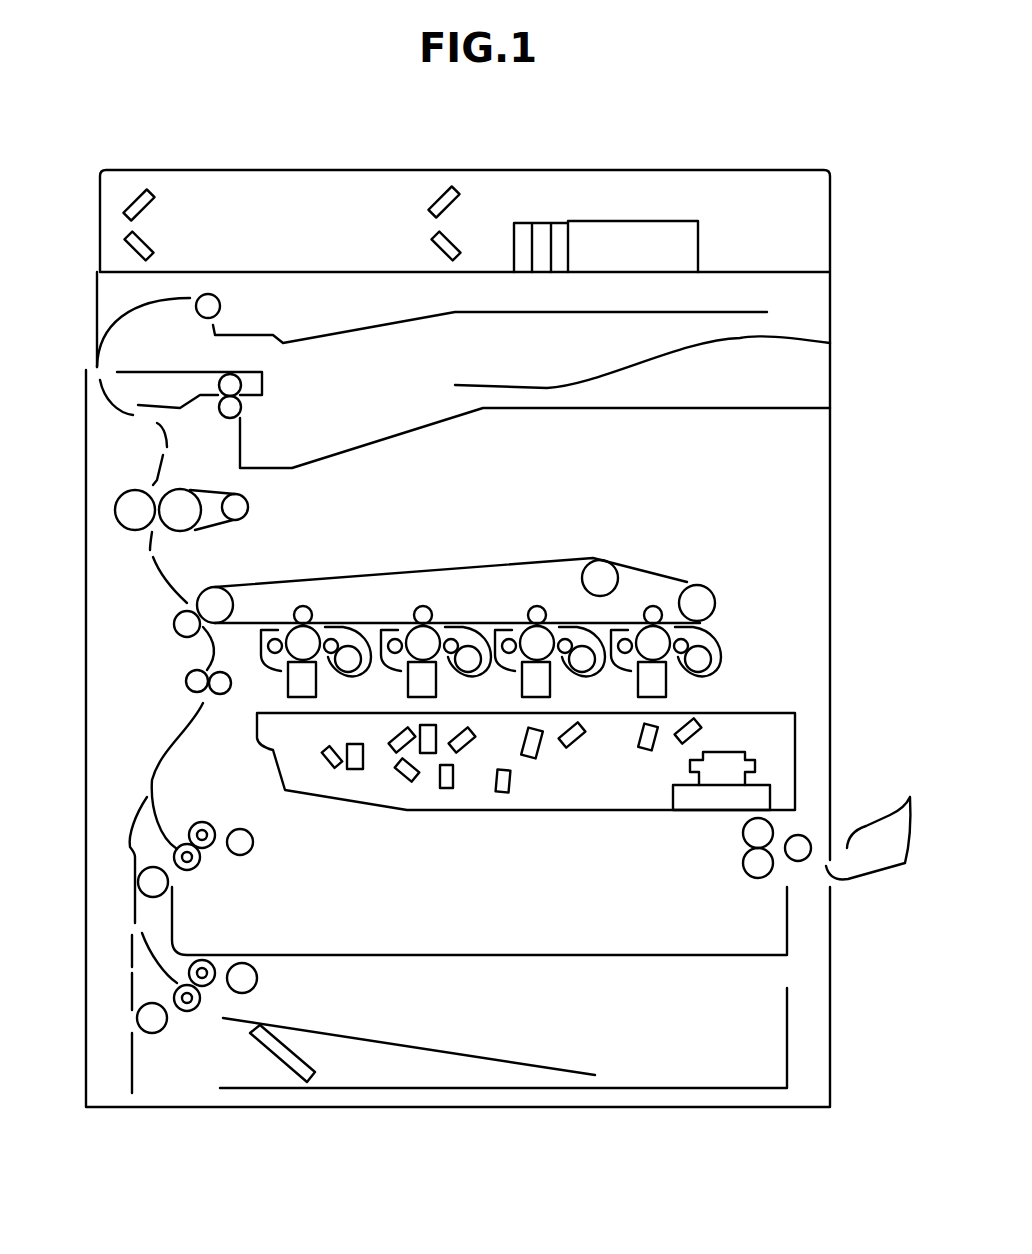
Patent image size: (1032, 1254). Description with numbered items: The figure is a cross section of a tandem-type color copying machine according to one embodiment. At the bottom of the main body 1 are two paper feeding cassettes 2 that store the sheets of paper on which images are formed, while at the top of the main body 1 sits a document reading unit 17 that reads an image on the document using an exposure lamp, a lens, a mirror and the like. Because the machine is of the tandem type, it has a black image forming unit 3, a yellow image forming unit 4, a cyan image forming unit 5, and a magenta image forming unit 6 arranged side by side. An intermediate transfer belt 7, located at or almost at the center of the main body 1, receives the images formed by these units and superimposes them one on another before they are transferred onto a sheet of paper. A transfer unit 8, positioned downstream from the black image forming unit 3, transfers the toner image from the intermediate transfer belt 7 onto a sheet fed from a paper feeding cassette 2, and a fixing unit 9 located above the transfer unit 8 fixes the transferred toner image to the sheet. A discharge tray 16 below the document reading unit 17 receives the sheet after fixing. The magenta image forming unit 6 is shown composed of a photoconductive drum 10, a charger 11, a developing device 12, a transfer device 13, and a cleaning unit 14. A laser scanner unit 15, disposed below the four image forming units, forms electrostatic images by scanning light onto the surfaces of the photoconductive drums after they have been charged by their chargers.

The main body 1 is at (900, 437).
The paper feeding cassette 2 is at (713, 898).
The black image forming unit 3 is at (353, 543).
The yellow image forming unit 4 is at (471, 544).
The cyan image forming unit 5 is at (583, 544).
The magenta image forming unit 6 is at (678, 611).
The intermediate transfer belt 7 is at (683, 582).
The transfer unit 8 is at (175, 617).
The fixing unit 9 is at (117, 525).
The photoconductive drum 10 is at (688, 668).
The charger 11 is at (666, 677).
The developing device 12 is at (723, 650).
The transfer device 13 is at (670, 627).
The cleaning unit 14 is at (627, 665).
The laser scanner unit 15 is at (795, 732).
The discharge tray 16 is at (830, 343).
The document reading unit 17 is at (843, 165).